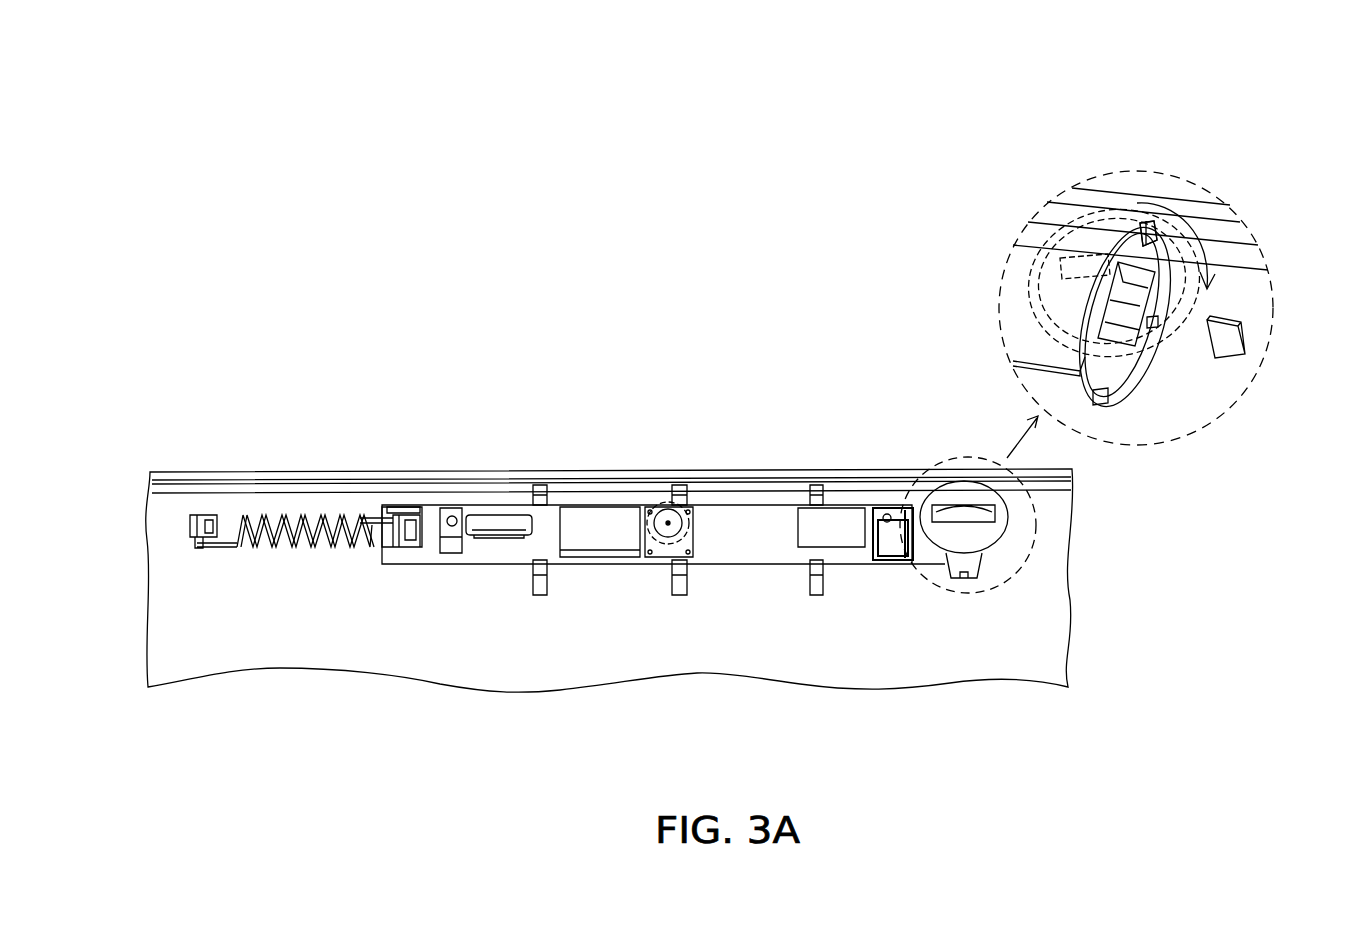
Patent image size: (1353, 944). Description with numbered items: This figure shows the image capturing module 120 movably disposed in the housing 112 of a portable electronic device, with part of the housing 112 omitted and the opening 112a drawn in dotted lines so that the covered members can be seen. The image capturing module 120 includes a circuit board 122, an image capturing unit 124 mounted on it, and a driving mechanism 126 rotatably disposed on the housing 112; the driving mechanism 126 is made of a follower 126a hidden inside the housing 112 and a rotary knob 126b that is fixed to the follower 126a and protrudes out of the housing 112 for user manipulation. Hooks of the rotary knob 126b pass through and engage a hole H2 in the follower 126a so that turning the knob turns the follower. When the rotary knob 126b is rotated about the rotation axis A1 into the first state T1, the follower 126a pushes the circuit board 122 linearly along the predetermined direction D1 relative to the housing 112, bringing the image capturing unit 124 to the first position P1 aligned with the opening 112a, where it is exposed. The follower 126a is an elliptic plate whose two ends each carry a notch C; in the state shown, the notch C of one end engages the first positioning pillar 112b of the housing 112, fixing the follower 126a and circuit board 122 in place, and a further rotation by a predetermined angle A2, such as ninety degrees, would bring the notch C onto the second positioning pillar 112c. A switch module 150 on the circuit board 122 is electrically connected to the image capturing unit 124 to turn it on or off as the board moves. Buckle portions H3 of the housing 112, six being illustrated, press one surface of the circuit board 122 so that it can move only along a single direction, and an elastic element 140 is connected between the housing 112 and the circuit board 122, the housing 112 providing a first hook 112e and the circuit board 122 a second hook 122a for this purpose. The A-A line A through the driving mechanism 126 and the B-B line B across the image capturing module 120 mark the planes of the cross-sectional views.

The housing 112 is at (918, 662).
The opening 112a is at (655, 506).
The first positioning pillar 112b is at (1150, 223).
The second positioning pillar 112c is at (1232, 344).
The first hook 112e is at (205, 515).
The image capturing module 120 is at (877, 300).
The circuit board 122 is at (540, 525).
The second hook 122a is at (400, 510).
The image capturing unit 124 is at (690, 508).
The driving mechanism 126 is at (912, 352).
The follower 126a is at (873, 523).
The rotary knob 126b is at (943, 497).
The elastic element 140 is at (286, 515).
The switch module 150 is at (410, 515).
The A-A line A is at (963, 615).
The rotation axis A1 is at (1152, 443).
The predetermined angle A2 is at (1212, 268).
The B-B line B is at (668, 625).
The notch C is at (388, 522).
The predetermined direction D1 is at (643, 604).
The hole H2 is at (1143, 253).
The buckle portions H3 is at (537, 595).
The first position P1 is at (670, 523).
The first state T1 is at (680, 485).